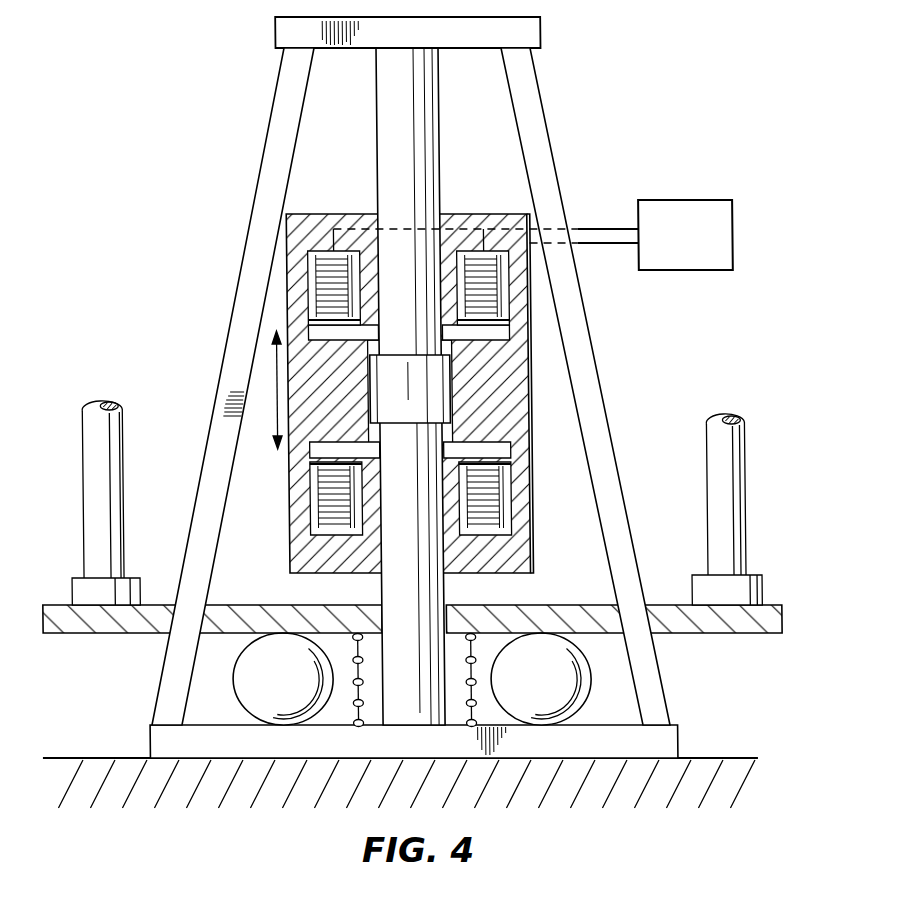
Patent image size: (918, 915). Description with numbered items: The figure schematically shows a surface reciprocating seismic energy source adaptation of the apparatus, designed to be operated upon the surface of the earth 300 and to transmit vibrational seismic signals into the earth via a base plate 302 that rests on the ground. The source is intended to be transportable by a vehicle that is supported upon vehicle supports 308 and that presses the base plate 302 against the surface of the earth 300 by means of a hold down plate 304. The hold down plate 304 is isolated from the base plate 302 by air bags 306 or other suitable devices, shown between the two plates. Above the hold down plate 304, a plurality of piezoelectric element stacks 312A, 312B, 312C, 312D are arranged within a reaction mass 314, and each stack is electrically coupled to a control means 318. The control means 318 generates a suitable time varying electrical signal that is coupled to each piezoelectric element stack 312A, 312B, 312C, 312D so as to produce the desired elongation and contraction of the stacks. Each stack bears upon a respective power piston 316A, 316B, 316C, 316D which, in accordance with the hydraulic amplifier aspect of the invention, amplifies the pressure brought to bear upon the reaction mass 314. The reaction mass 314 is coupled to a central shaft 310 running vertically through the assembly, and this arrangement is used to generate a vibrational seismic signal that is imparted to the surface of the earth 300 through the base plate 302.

The surface of the earth 300 is at (712, 770).
The base plate 302 is at (658, 735).
The hold down plate 304 is at (767, 620).
The air bags 306 is at (241, 665).
The vehicle supports 308 is at (101, 505).
The central shaft 310 is at (420, 125).
The piezoelectric element stack 312A is at (314, 286).
The piezoelectric element stack 312B is at (509, 268).
The piezoelectric element stack 312C is at (319, 511).
The piezoelectric element stack 312D is at (484, 516).
The reaction mass 314 is at (504, 372).
The power piston 316A is at (308, 322).
The power piston 316B is at (507, 325).
The power piston 316C is at (305, 458).
The power piston 316D is at (505, 457).
The control means 318 is at (710, 231).